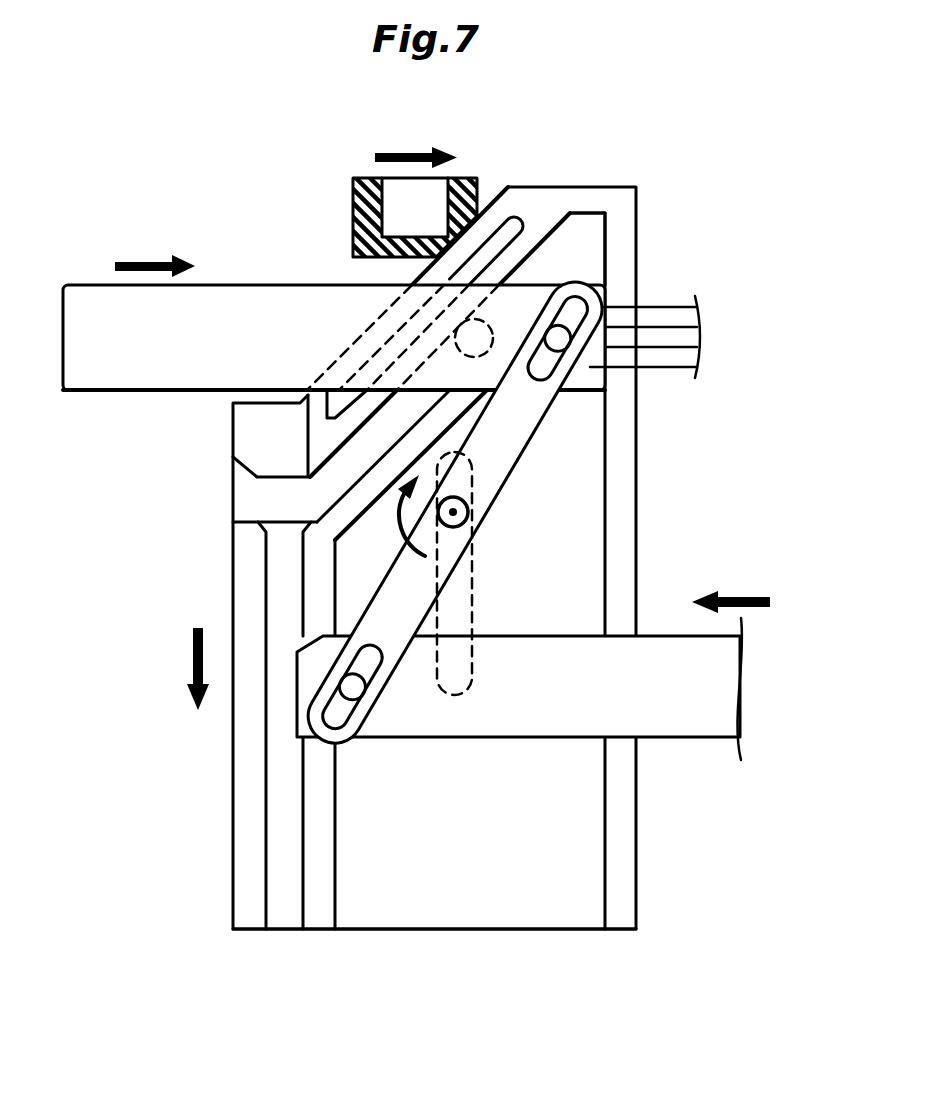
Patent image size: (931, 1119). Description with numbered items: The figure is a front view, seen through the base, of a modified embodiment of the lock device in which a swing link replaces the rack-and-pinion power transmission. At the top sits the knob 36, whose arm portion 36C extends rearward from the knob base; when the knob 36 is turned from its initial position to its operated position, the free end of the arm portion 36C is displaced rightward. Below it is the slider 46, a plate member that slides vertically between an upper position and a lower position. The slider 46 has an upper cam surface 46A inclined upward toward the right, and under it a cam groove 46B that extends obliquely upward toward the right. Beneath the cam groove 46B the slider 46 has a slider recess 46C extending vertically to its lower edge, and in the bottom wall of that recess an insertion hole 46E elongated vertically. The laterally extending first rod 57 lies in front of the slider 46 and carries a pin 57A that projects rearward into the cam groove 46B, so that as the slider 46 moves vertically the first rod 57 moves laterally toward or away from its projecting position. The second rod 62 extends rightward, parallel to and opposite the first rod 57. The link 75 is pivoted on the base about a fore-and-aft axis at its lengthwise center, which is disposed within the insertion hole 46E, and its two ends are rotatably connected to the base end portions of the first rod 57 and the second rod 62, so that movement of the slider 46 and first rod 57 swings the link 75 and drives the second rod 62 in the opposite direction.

The knob 36 is at (412, 210).
The arm portion 36C is at (370, 217).
The slider 46 is at (476, 574).
The upper cam surface 46A is at (497, 200).
The cam groove 46B is at (576, 252).
The slider recess 46C is at (523, 907).
The insertion hole 46E is at (472, 597).
The first rod 57 is at (334, 364).
The pin 57A is at (466, 357).
The second rod 62 is at (727, 673).
The link 75 is at (500, 455).